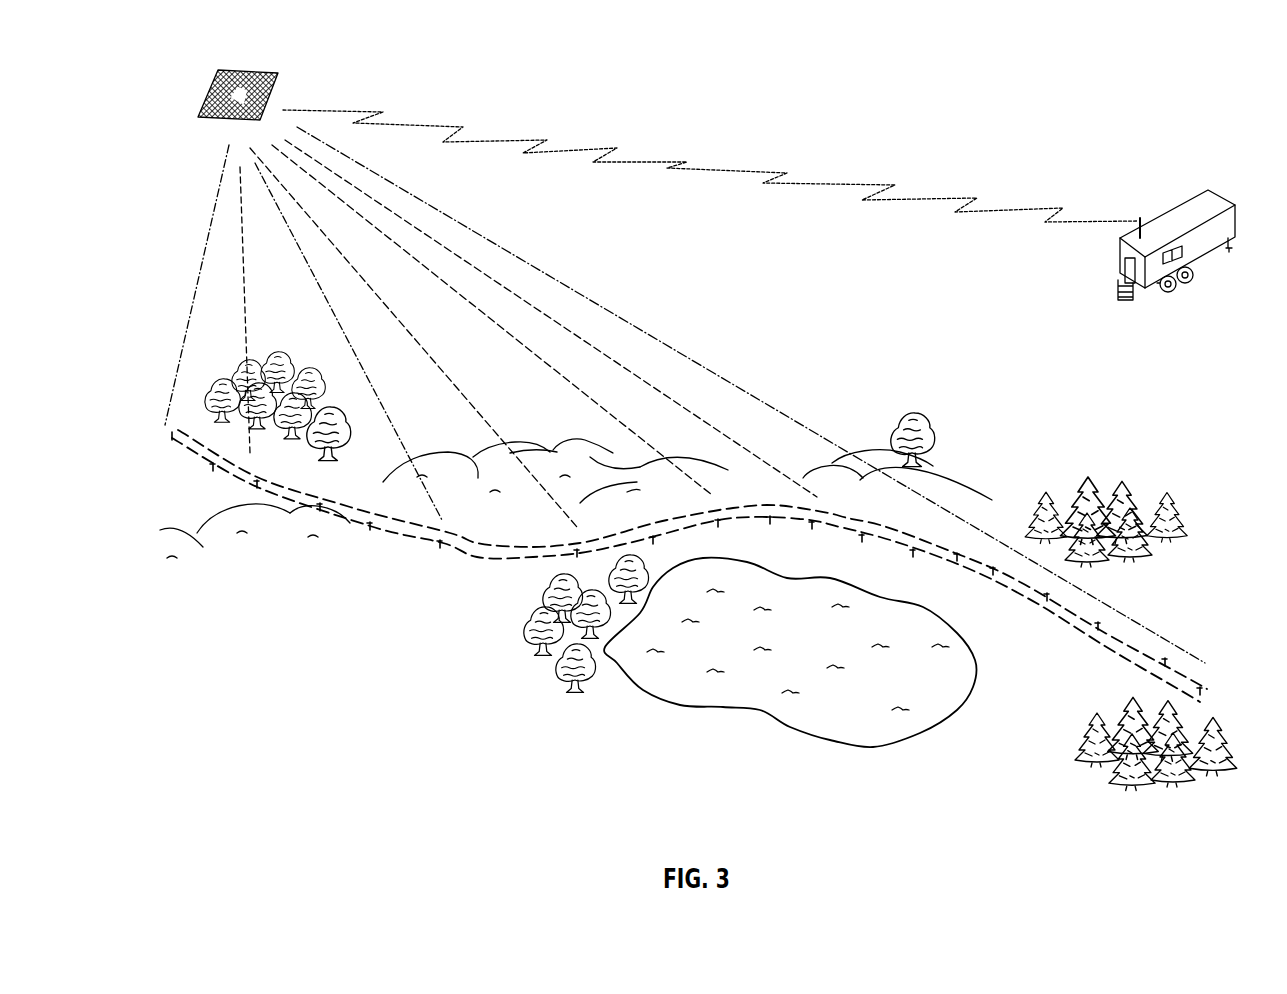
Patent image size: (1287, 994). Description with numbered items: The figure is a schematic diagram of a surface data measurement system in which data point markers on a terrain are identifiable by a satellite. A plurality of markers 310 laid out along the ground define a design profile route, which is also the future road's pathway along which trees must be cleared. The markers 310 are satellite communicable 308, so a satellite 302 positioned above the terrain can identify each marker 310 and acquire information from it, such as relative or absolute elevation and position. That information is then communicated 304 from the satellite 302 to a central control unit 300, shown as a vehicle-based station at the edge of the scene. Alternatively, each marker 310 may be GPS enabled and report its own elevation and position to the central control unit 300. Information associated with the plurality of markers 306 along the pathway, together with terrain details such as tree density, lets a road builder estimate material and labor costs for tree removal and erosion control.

The central control unit 300 is at (1185, 205).
The satellite 302 is at (207, 102).
The communication to central control unit 304 is at (982, 198).
The plurality of markers 306 is at (443, 542).
The satellite communication 308 is at (203, 248).
The markers defining design profile route 310 is at (1080, 620).